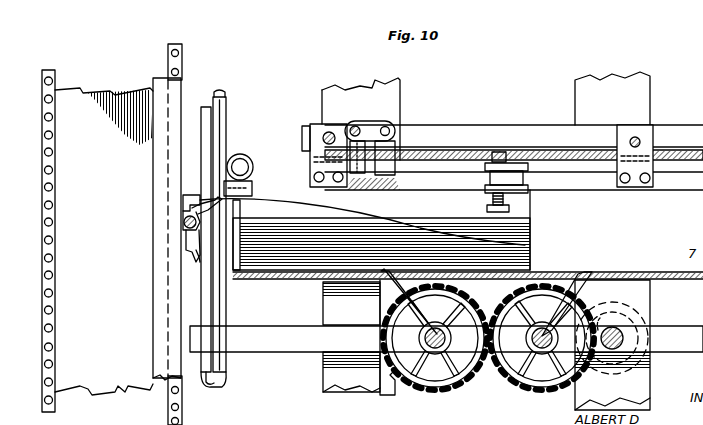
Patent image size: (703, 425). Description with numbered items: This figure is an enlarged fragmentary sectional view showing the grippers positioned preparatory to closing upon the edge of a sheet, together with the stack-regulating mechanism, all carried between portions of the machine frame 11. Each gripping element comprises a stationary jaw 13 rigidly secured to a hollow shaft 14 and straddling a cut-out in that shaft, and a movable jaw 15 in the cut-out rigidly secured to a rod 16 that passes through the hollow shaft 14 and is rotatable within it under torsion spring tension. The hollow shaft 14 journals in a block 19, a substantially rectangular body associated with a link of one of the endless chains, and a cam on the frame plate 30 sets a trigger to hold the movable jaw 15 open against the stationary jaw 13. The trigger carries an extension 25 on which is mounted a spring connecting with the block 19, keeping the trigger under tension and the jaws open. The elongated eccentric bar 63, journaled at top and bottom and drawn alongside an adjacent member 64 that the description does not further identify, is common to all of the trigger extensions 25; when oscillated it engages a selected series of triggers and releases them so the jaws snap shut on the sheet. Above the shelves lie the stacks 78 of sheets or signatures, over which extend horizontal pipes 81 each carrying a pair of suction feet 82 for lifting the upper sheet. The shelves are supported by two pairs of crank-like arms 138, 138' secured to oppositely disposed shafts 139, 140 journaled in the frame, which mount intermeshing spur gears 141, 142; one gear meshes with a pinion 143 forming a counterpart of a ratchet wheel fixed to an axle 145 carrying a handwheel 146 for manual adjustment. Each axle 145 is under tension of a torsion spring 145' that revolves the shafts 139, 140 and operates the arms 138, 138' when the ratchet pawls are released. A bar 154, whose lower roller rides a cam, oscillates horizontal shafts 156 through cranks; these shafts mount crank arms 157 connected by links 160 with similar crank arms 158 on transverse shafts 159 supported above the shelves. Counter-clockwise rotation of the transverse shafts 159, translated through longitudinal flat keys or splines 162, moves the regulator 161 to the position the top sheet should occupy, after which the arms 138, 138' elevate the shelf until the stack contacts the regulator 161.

The frame 11 is at (323, 385).
The stationary jaw 13 is at (188, 212).
The hollow shaft 14 is at (188, 240).
The movable jaw 15 is at (196, 258).
The rod 16 is at (184, 222).
The block 19 is at (200, 206).
The extension 25 is at (194, 196).
The frame plate 30 is at (122, 390).
The elongated eccentric bar 63 is at (220, 90).
The rod 64 is at (227, 112).
The stacks 78 is at (276, 270).
The pipes 81 is at (244, 156).
The suction elements or feet 82 is at (250, 184).
The arms 138 is at (567, 289).
The arms 138' is at (394, 301).
The shaft 139 is at (542, 338).
The shaft 140 is at (433, 330).
The spur gear 141 is at (528, 399).
The spur gear 142 is at (416, 392).
The pinion 143 is at (648, 337).
The axle 145 is at (645, 347).
The torsion spring 145' is at (611, 317).
The handwheel 146 is at (650, 312).
The bar 154 is at (400, 86).
The shafts 156 is at (323, 117).
The crank arms 157 is at (364, 122).
The crank arms 158 is at (360, 184).
The transverse shafts 159 is at (470, 150).
The links 160 is at (398, 130).
The regulator 161 is at (488, 210).
The flat keys or splines 162 is at (513, 150).